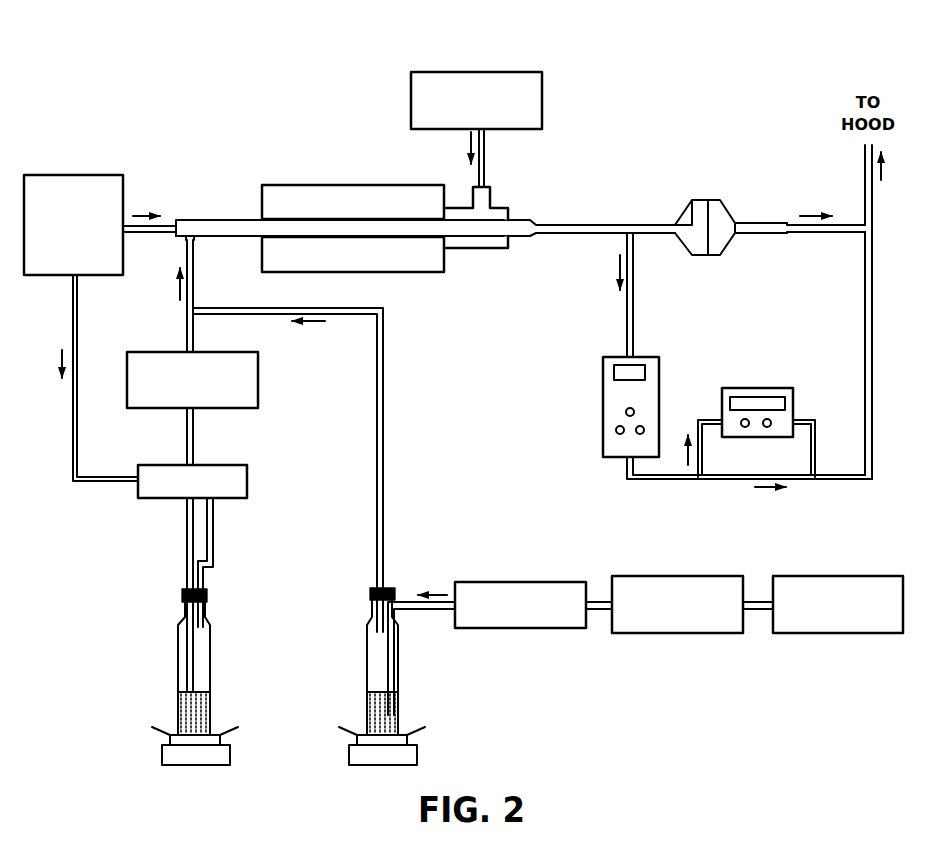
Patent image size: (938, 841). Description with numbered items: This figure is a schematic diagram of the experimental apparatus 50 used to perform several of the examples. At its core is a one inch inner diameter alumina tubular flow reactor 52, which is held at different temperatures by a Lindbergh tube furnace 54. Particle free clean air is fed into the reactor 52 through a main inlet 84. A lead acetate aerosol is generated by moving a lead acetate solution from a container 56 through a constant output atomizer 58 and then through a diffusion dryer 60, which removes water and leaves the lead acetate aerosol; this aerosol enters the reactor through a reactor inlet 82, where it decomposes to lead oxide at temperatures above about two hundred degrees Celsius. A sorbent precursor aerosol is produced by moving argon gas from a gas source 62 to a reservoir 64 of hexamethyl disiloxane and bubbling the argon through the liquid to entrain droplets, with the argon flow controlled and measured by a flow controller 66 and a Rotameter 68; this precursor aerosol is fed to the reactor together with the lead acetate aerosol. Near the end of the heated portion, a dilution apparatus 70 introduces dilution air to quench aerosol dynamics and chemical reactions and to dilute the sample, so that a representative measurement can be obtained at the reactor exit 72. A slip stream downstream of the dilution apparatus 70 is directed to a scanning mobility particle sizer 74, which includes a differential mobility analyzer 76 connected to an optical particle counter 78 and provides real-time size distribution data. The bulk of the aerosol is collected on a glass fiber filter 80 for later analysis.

The experimental apparatus 50 is at (708, 54).
The tubular flow reactor 52 is at (383, 228).
The tube furnace 54 is at (363, 265).
The container 56 is at (211, 648).
The constant output atomizer 58 is at (247, 481).
The diffusion dryer 60 is at (258, 372).
The gas source 62 is at (842, 576).
The reservoir 64 is at (398, 674).
The flow controller 66 is at (667, 576).
The Rotameter 68 is at (512, 582).
The dilution apparatus 70 is at (497, 72).
The reactor exit 72 is at (482, 237).
The scanning mobility particle sizer 74 is at (766, 344).
The differential mobility analyzer 76 is at (645, 357).
The optical particle counter 78 is at (762, 388).
The glass fiber filter 80 is at (710, 200).
The reactor inlet 82 is at (190, 240).
The main inlet 84 is at (185, 219).